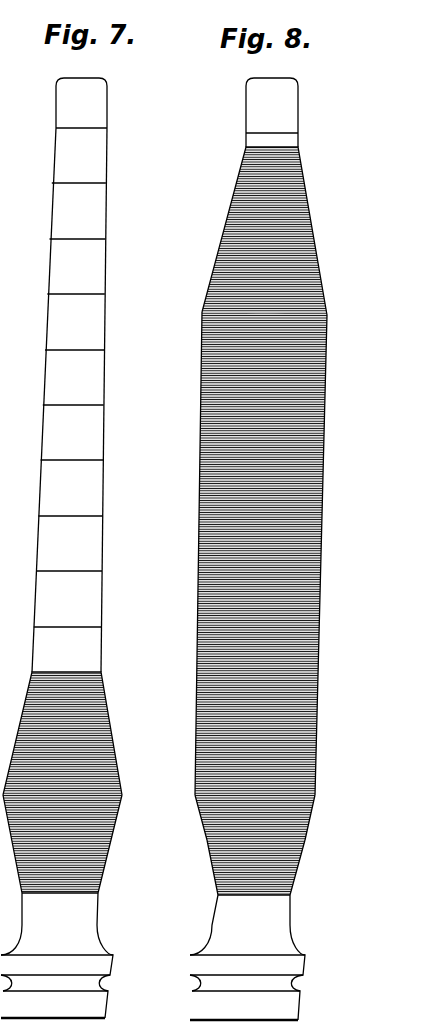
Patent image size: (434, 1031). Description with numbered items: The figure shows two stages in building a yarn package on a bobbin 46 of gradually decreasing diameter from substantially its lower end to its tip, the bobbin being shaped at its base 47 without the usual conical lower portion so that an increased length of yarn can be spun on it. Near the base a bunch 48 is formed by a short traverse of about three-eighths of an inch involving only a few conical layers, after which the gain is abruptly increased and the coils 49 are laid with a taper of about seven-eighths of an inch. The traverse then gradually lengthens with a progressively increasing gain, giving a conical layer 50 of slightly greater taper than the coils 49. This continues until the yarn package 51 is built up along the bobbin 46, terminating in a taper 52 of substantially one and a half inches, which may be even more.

In FIG. 7, the bobbin 46 is at (97, 104).
In FIG. 8, the bobbin 46 is at (287, 109).
In FIG. 7, the base of the bobbin 47 is at (85, 934).
In FIG. 8, the base of the bobbin 47 is at (278, 938).
In FIG. 7, the bunch 48 is at (97, 889).
In FIG. 8, the bunch 48 is at (295, 888).
In FIG. 7, the coils 49 is at (95, 864).
In FIG. 8, the coils 49 is at (290, 861).
In FIG. 7, the conical layer 50 is at (105, 763).
In FIG. 8, the conical layer 50 is at (300, 813).
In FIG. 8, the yarn package 51 is at (300, 586).
In FIG. 8, the taper 52 is at (305, 279).